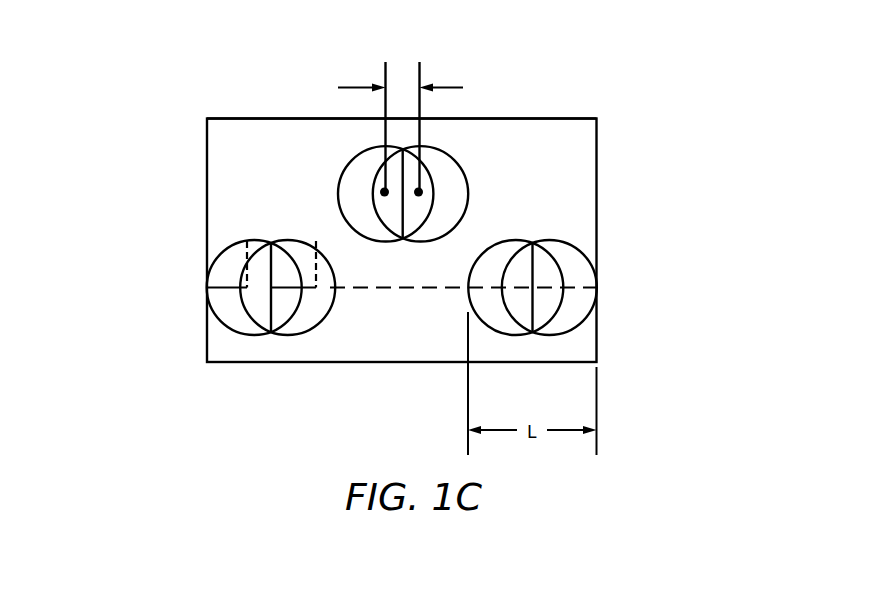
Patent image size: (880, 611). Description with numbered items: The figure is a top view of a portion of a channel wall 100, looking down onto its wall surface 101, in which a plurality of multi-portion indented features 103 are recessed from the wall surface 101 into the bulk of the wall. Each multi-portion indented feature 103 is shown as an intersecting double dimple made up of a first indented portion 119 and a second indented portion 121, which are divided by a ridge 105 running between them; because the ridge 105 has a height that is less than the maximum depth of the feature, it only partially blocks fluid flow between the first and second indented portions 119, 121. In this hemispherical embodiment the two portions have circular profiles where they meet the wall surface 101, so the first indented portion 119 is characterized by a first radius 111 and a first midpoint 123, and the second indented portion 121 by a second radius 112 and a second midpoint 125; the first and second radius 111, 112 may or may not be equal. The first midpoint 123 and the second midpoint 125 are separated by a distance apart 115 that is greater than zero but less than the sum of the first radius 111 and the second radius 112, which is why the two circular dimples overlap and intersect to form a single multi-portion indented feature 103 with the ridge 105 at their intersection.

The channel wall 100 is at (199, 60).
The wall surface 101 is at (555, 137).
The multi-portion indented features 103 is at (240, 345).
The ridge 105 is at (533, 309).
The first radius 111 is at (245, 265).
The second radius 112 is at (273, 285).
The distance apart 115 is at (405, 75).
The first indented portion 119 is at (373, 228).
The second indented portion 121 is at (428, 228).
The first midpoint 123 is at (381, 189).
The second midpoint 125 is at (422, 193).